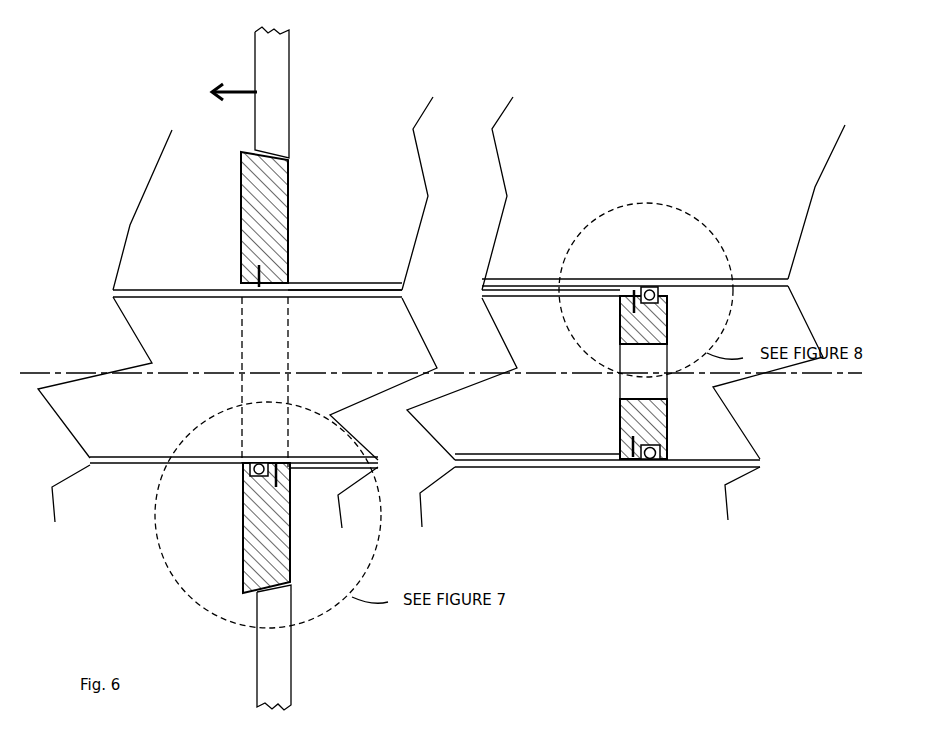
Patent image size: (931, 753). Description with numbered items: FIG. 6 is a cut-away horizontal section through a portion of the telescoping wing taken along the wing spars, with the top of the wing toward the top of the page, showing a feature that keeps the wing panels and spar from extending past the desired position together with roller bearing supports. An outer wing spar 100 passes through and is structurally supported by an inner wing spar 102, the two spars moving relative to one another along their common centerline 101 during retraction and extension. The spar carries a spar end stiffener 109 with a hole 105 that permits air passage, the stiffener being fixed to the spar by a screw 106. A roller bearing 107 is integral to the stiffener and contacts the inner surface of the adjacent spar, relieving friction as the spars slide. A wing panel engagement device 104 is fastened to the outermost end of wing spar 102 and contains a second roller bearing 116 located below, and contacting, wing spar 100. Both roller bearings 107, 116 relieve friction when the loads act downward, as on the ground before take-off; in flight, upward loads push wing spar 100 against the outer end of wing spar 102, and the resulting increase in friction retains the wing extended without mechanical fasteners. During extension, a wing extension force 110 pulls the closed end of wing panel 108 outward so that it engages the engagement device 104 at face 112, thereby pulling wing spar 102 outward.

The outer wing spar 100 is at (163, 290).
The centerline 101 is at (532, 373).
The inner wing spar 102 is at (375, 282).
The wing panel engagement device 104 is at (288, 215).
The hole 105 is at (628, 387).
The screw 106 is at (242, 258).
The roller bearing 107 is at (652, 288).
The closed end of wing panel 108 is at (290, 70).
The spar end stiffener 109 is at (667, 327).
The wing extension force 110 is at (238, 92).
The face 112 is at (241, 152).
The roller bearing 116 is at (265, 462).